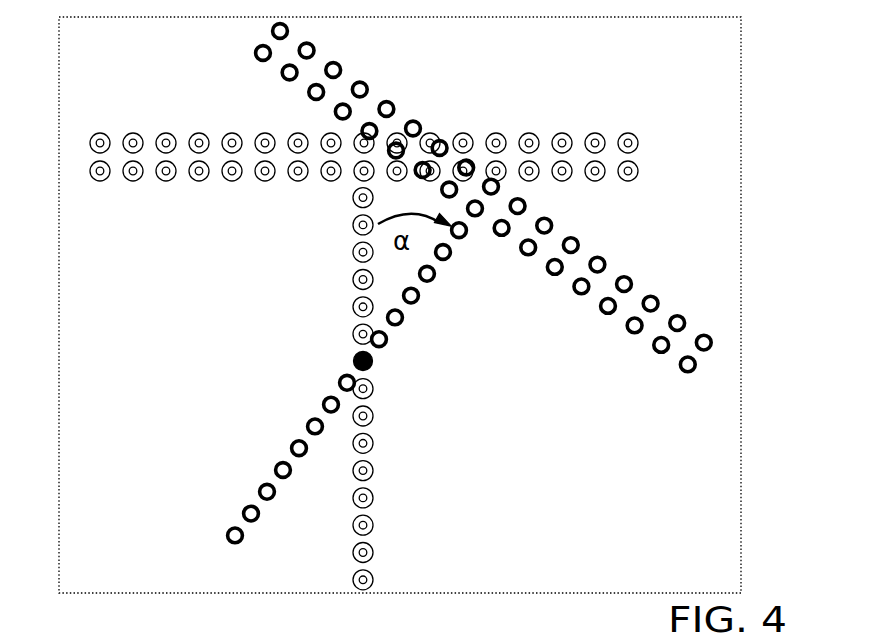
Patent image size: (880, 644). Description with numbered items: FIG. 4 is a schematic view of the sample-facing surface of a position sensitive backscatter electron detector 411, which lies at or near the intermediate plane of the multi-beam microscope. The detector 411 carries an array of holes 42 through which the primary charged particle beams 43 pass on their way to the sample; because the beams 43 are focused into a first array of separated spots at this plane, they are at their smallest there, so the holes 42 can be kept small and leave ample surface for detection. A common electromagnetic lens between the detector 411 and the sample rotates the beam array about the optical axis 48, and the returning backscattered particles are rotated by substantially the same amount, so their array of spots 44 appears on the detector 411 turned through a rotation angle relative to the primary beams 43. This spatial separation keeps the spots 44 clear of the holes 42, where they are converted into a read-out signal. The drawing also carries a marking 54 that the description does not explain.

The position sensitive backscatter electron detector 411 is at (125, 464).
The holes 42 is at (297, 178).
The primary charged particle beams 43 is at (230, 176).
The spots of the backscattered charged particles 44 is at (325, 91).
The optical axis 48 is at (373, 358).
The connecting wire 54 is at (518, 643).